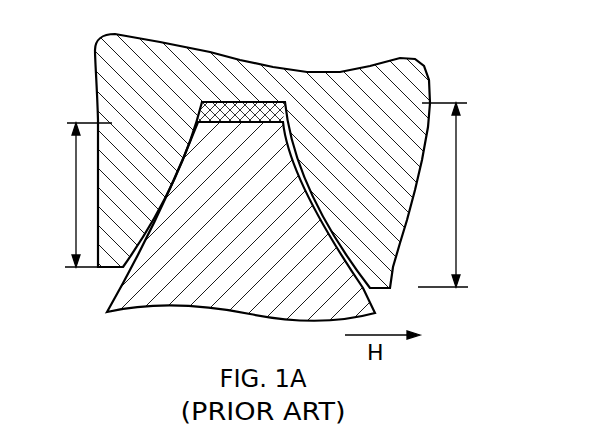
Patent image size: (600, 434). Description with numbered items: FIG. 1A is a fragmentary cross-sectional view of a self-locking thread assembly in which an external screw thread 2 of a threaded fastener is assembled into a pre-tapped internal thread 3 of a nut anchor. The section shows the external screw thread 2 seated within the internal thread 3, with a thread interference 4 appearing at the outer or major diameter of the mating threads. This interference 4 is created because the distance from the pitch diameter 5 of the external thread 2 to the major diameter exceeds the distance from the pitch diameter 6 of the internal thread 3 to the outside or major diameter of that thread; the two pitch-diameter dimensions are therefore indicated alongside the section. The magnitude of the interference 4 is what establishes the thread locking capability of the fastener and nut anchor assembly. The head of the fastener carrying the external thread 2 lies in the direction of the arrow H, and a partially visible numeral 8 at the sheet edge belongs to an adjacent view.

The insert body 2 is at (224, 278).
The tire tread body 3 is at (309, 185).
The coating layer on insert 4 is at (243, 110).
The tread depth dimension 5 is at (448, 195).
The insert height dimension 6 is at (83, 195).
The element of adjacent figure (partially visible) 8 is at (87, 432).